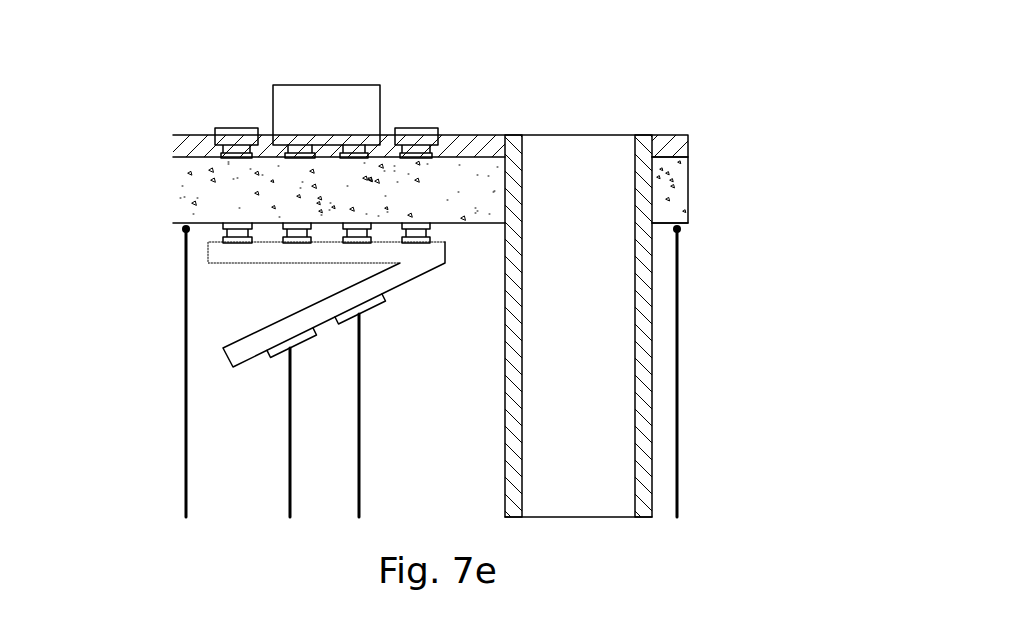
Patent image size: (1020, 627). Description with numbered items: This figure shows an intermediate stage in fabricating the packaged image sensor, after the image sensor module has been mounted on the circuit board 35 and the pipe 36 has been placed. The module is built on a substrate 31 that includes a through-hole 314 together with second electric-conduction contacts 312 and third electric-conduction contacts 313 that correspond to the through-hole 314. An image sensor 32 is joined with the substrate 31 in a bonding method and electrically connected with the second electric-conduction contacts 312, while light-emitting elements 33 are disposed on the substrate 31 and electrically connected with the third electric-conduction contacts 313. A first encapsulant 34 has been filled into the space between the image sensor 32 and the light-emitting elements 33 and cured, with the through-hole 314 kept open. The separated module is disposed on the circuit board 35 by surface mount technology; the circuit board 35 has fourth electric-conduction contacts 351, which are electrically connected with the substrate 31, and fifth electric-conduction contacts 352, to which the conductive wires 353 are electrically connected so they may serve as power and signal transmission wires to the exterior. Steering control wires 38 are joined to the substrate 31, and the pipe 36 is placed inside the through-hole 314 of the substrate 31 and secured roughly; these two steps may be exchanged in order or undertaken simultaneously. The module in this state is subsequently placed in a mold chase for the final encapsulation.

The substrate 31 is at (185, 190).
The second electric-conduction contact 312 is at (350, 160).
The third electric-conduction contact 313 is at (220, 155).
The through-hole 314 is at (652, 203).
The image sensor 32 is at (308, 100).
The light-emitting element 33 is at (240, 134).
The first encapsulant 34 is at (481, 136).
The circuit board 35 is at (247, 345).
The fourth electric-conduction contact 351 is at (223, 237).
The fifth electric-conduction contact 352 is at (367, 307).
The conductive wire 353 is at (287, 448).
The pipe 36 is at (643, 323).
The steering control wire 38 is at (182, 447).